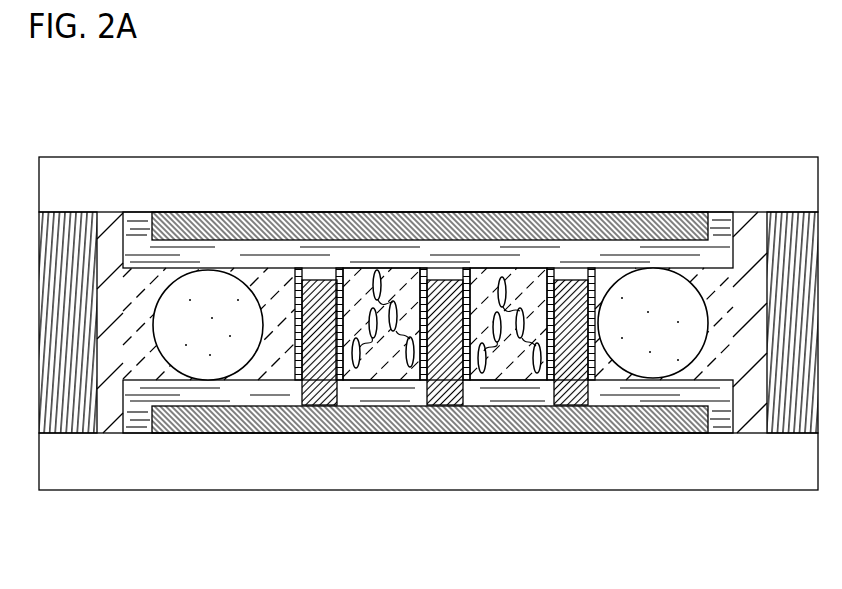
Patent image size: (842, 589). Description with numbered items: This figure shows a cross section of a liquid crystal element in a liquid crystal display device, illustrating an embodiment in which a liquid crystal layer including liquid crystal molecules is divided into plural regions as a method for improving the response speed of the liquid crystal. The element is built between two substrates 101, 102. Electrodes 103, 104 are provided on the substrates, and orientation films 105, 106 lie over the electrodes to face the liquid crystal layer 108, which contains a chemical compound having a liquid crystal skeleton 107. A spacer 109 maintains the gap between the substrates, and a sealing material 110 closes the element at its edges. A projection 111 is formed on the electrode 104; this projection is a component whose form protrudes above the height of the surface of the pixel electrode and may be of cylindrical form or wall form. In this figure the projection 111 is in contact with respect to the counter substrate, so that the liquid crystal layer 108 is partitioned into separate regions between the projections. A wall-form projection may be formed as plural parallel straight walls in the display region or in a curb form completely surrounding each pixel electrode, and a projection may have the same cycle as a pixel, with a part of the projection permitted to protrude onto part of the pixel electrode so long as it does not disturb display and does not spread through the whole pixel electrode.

The substrate 101 is at (428, 149).
The substrate 102 is at (428, 484).
The electrode 103 is at (430, 163).
The electrode 104 is at (430, 480).
The orientation film 105 is at (428, 180).
The orientation film 106 is at (428, 469).
The chemical compound having a liquid crystal skeleton 107 is at (490, 233).
The liquid crystal layer 108 is at (435, 254).
The spacer 109 is at (414, 322).
The sealing material 110 is at (428, 389).
The projection 111 is at (445, 411).